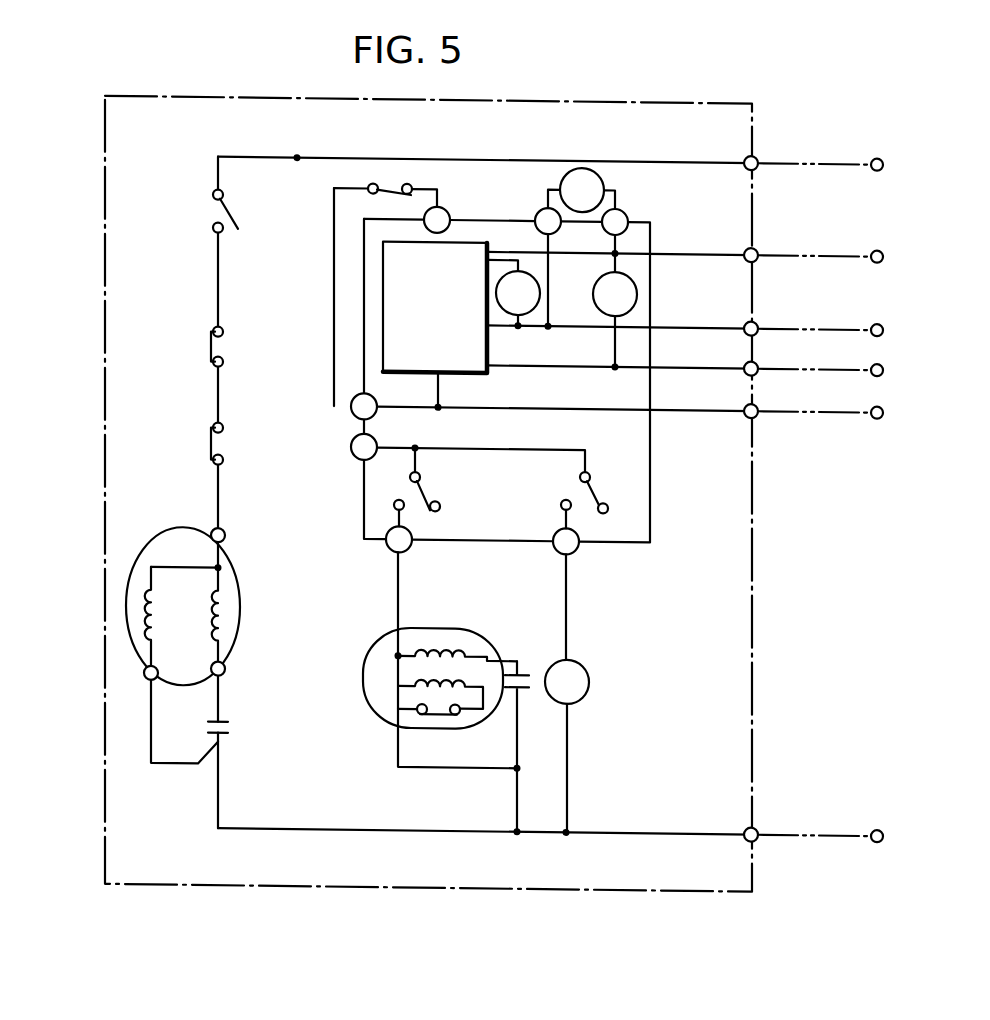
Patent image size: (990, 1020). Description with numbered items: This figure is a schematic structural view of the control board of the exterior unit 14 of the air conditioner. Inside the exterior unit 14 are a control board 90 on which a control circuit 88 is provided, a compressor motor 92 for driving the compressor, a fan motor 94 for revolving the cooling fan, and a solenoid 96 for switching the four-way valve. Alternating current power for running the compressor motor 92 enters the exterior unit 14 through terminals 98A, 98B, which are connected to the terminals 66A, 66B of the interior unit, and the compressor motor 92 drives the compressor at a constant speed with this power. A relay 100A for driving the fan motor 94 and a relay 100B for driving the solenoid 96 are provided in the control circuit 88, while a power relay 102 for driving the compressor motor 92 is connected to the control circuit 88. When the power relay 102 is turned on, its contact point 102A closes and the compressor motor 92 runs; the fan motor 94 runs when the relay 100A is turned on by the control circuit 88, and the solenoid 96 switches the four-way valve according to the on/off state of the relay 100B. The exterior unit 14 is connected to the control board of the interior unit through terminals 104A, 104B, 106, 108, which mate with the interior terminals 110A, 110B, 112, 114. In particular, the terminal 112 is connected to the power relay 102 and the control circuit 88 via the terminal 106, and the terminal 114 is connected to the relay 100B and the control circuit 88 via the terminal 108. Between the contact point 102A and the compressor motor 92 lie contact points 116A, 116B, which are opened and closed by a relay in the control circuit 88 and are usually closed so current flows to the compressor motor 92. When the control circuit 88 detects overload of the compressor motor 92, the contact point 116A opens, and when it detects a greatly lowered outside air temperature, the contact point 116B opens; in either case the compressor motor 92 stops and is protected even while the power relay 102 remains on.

The exterior unit 14 is at (572, 94).
The contact point 102A is at (214, 192).
The contact point 116B is at (210, 348).
The contact point 116A is at (210, 440).
The compressor motor 92 is at (240, 559).
The control board 90 is at (651, 445).
The control circuit 88 is at (465, 237).
The power relay 102 is at (599, 170).
The relay 100A is at (532, 306).
The relay 100B is at (637, 286).
The fan motor 94 is at (438, 623).
The solenoid 96 is at (583, 659).
The terminal 98A is at (757, 149).
The terminal 66A is at (883, 149).
The terminal 104A is at (757, 241).
The terminal 110A is at (883, 242).
The terminal 106 is at (757, 314).
The terminal 112 is at (883, 316).
The terminal 108 is at (757, 365).
The terminal 114 is at (883, 364).
The terminal 104B is at (757, 408).
The terminal 110B is at (883, 407).
The terminal 98B is at (756, 831).
The terminal 66B is at (882, 831).